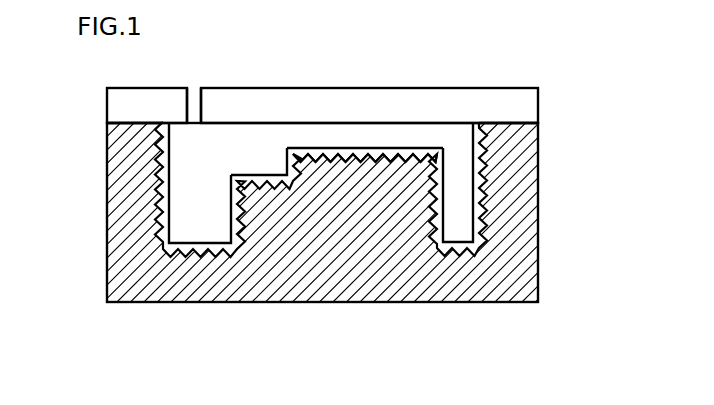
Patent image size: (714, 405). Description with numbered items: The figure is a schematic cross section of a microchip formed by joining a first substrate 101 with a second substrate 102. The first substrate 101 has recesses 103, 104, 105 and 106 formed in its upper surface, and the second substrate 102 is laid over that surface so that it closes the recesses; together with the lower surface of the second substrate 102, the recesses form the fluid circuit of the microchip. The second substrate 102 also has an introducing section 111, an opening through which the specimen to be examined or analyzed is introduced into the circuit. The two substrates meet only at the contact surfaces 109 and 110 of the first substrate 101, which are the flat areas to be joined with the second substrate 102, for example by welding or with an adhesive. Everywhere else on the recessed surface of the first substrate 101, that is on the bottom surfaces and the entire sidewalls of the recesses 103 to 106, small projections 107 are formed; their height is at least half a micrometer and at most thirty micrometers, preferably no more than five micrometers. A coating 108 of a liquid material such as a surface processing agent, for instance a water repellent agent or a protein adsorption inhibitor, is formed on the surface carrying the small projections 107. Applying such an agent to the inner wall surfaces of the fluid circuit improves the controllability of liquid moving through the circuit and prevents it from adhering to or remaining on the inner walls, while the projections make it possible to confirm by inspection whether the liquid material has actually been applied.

The first substrate 101 is at (513, 261).
The second substrate 102 is at (512, 103).
The recess 103 is at (197, 232).
The recess 104 is at (259, 163).
The recess 105 is at (345, 132).
The recess 106 is at (466, 237).
The small projections 107 is at (487, 192).
The coating 108 is at (409, 152).
The contact surface 109 is at (515, 125).
The contact surface 110 is at (128, 130).
The introducing section 111 is at (195, 105).